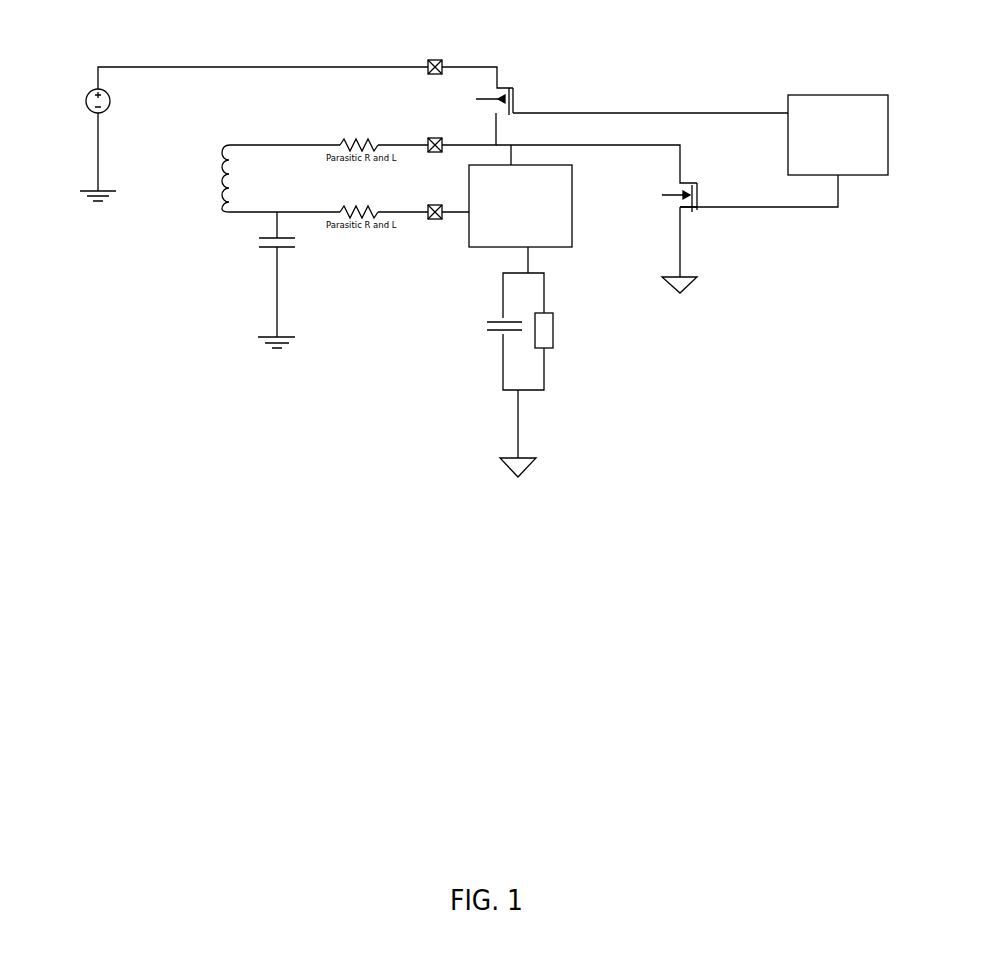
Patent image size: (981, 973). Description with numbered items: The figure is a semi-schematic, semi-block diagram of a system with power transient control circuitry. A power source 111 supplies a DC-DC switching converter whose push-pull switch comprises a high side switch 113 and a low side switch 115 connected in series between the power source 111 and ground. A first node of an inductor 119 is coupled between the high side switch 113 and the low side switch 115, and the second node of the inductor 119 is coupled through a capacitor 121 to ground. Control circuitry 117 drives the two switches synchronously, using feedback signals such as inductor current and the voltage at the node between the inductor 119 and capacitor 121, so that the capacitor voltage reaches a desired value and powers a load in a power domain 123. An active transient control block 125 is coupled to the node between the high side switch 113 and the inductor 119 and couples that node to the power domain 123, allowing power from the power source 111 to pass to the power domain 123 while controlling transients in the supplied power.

The power source 111 is at (112, 101).
The high side switch 113 is at (512, 85).
The low side switch 115 is at (695, 187).
The control circuitry 117 is at (820, 93).
The inductor 119 is at (223, 155).
The capacitor 121 is at (262, 250).
The power domain 123 is at (655, 352).
The active transient control block 125 is at (572, 211).